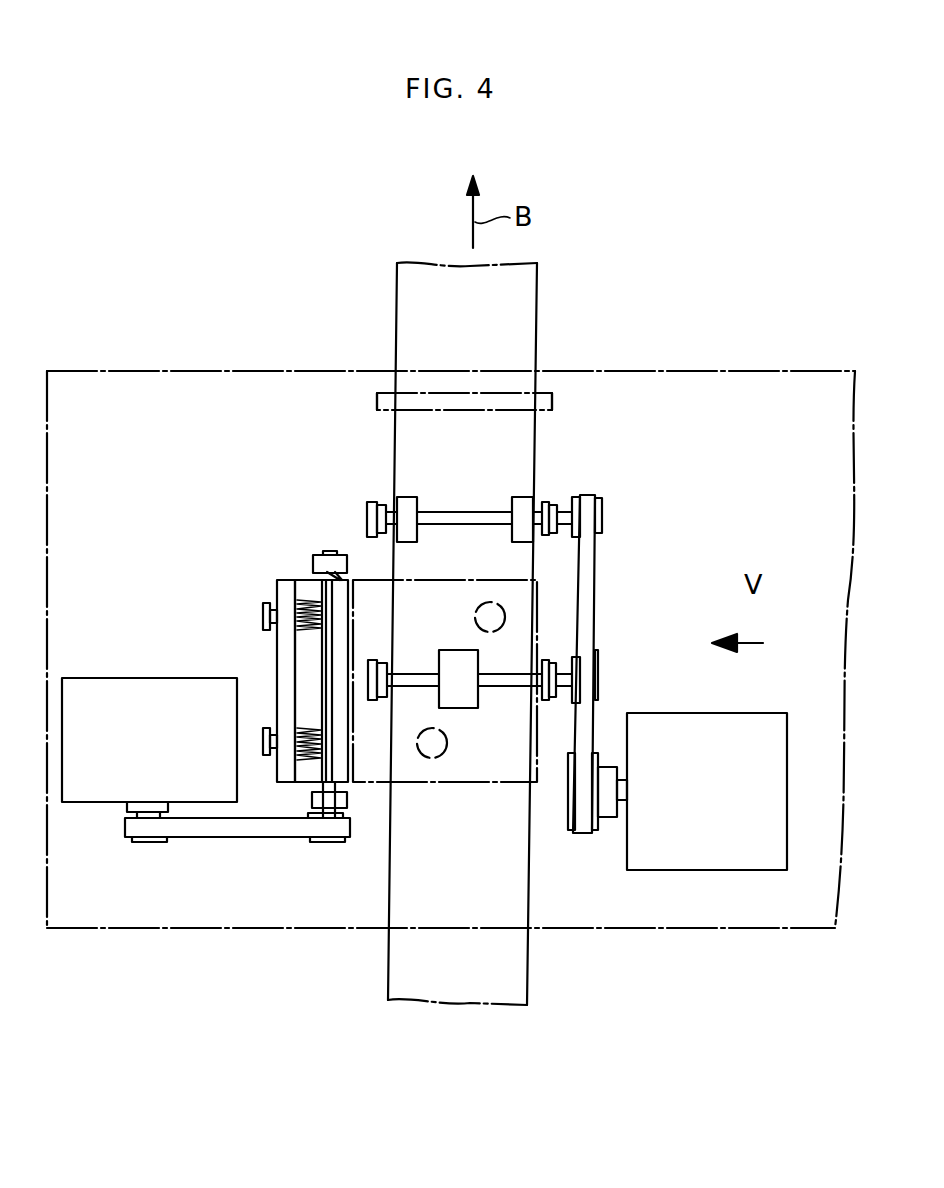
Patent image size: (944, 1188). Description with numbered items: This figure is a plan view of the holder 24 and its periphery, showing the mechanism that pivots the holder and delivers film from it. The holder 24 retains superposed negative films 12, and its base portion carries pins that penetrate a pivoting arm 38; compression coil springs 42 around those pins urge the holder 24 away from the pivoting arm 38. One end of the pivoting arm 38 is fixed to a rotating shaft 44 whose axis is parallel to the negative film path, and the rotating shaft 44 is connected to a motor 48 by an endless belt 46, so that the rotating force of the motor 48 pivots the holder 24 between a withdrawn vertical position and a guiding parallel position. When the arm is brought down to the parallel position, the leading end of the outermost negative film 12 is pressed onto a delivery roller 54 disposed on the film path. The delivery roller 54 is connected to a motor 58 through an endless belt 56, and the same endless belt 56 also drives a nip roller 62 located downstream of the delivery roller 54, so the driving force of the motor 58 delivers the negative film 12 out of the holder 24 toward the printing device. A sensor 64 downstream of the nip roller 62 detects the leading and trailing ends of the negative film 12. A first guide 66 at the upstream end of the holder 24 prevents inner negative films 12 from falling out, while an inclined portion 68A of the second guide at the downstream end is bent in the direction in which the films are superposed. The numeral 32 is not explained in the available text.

The negative film 12 is at (528, 958).
The holder 24 is at (320, 765).
The movable plate 32 is at (345, 750).
The pivoting arm 38 is at (277, 680).
The compression coil springs 42 is at (309, 600).
The rotating shaft 44 is at (333, 553).
The endless belt 46 is at (212, 830).
The motor 48 is at (147, 695).
The delivery roller 54 is at (470, 708).
The endless belt 56 is at (588, 630).
The motor 58 is at (719, 727).
The nip roller 62 is at (403, 497).
The sensor 64 is at (548, 390).
The first guide 66 is at (337, 806).
The inclined portion 68A is at (338, 568).